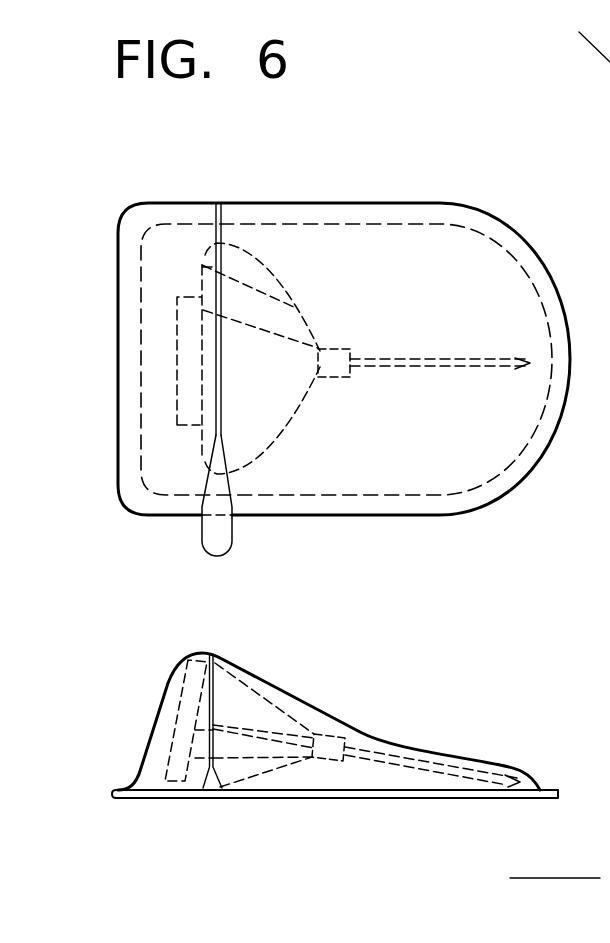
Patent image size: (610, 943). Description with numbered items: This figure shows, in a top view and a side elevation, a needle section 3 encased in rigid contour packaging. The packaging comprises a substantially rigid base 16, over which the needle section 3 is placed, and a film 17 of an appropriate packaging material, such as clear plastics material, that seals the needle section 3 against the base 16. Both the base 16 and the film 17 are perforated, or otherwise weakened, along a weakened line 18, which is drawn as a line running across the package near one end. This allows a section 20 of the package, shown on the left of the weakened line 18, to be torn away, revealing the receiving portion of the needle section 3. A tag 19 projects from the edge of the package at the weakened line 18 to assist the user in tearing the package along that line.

The needle section 3 is at (247, 313).
The base 16 is at (452, 203).
The film 17 is at (390, 250).
The weakened line 18 is at (214, 218).
The tag 19 is at (215, 533).
The section 20 is at (155, 422).